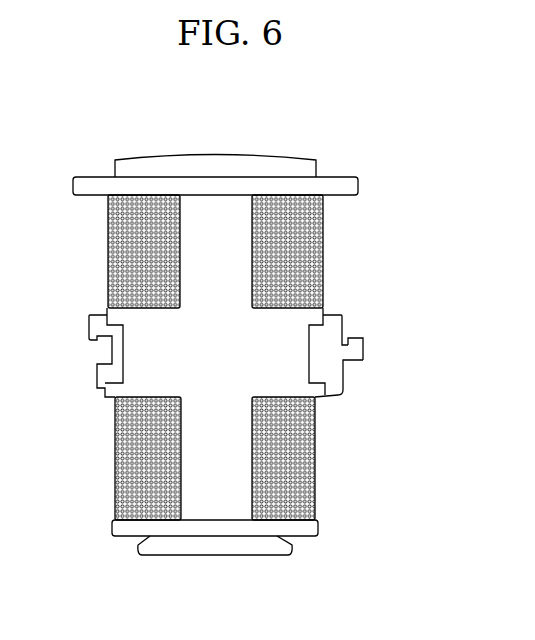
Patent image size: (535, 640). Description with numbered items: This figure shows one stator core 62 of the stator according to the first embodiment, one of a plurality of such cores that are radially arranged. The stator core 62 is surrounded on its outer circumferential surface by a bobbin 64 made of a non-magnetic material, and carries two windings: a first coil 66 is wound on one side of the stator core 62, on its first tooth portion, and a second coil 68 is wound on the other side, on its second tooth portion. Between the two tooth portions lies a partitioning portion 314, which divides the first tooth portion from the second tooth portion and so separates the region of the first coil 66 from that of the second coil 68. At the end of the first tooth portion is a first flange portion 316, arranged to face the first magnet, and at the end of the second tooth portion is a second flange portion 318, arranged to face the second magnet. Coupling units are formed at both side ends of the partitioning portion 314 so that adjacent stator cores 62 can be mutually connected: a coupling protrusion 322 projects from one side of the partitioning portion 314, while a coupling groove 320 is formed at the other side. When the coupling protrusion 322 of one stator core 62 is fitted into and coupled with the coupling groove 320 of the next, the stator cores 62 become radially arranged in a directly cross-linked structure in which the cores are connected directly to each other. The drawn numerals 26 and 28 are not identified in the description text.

The stator core 62 is at (322, 143).
The second flange portion 318 is at (205, 157).
The upper left filter mesh 26 is at (112, 223).
The second coil 68 is at (322, 257).
The coupling groove 320 is at (110, 369).
The partitioning portion 314 is at (338, 330).
The coupling protrusion 322 is at (363, 353).
The lower left filter mesh 28 is at (115, 460).
The first coil 66 is at (311, 470).
The bobbin 64 is at (222, 487).
The first flange portion 316 is at (182, 550).